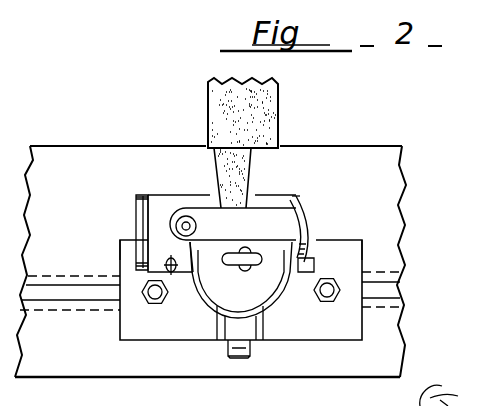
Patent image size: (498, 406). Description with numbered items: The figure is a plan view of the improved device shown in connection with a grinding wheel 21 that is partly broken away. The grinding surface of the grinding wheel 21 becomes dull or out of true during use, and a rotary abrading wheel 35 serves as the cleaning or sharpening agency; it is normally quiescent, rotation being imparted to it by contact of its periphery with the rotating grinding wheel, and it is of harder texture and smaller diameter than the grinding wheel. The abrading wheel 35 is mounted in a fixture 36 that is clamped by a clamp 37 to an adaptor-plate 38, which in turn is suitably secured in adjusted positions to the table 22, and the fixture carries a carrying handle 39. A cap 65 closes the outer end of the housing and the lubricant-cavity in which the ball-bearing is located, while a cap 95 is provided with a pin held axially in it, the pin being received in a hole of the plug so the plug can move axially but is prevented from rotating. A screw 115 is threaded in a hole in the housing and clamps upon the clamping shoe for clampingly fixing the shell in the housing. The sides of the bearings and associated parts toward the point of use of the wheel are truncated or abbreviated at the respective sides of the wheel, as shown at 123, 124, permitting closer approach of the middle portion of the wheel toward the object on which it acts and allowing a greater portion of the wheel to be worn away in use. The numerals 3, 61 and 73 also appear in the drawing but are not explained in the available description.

The grinding machine 3 is at (118, 240).
The grinding wheel 21 is at (268, 121).
The table 22 is at (395, 207).
The rotary abrading wheel 35 is at (254, 178).
The fixture 36 is at (278, 306).
The clamp 37 is at (252, 348).
The adaptor-plate 38 is at (337, 333).
The carrying handle 39 is at (254, 267).
The fastening nut 61 is at (306, 274).
The cap 65 is at (306, 200).
The recess 73 is at (369, 228).
The cap 95 is at (134, 214).
The screw 115 is at (197, 227).
The truncated side of bearings 123 is at (173, 198).
The truncated side of bearings 124 is at (297, 196).